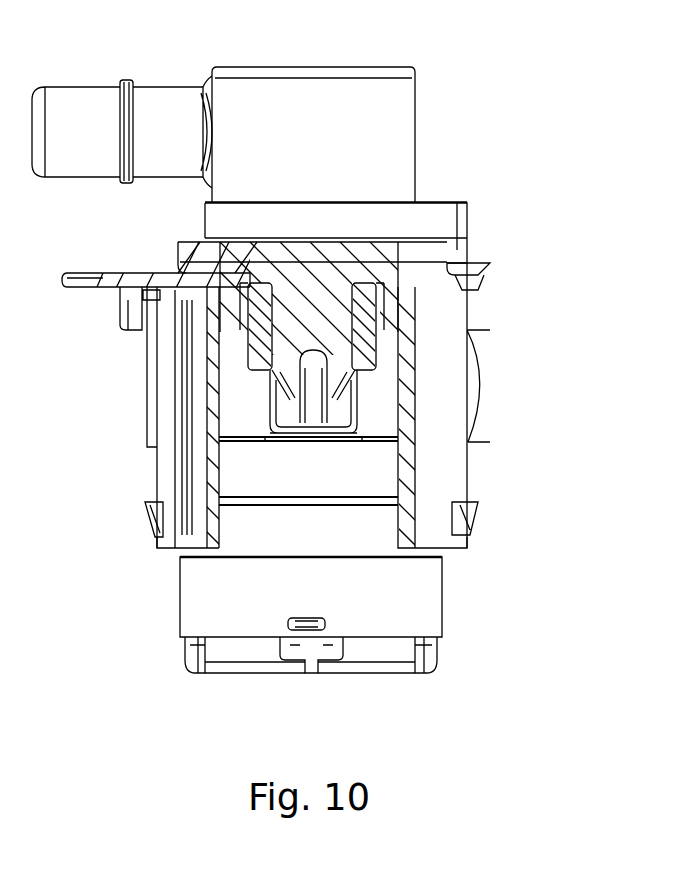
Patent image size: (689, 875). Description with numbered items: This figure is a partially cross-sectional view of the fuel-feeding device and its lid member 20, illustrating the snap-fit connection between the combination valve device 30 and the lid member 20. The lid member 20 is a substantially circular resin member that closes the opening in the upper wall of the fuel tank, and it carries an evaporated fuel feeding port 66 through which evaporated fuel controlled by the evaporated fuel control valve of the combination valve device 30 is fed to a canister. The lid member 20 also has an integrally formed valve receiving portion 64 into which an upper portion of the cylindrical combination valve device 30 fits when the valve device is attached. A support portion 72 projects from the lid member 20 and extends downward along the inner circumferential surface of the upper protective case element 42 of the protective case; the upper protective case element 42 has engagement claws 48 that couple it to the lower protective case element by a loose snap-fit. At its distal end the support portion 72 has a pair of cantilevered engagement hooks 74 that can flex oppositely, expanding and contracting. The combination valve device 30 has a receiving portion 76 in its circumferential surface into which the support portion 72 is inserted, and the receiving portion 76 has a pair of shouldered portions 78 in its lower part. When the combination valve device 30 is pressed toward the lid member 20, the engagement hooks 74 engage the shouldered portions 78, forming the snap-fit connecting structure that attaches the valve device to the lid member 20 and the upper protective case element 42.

The evaporated fuel feeding port 66 is at (82, 100).
The support portion 72 is at (312, 307).
The valve receiving portion 64 is at (188, 253).
The lid member 20 is at (463, 268).
The receiving portion 76 is at (365, 320).
The upper protective case element 42 is at (440, 355).
The engagement hooks 74 is at (337, 390).
The shouldered portions 78 is at (356, 408).
The engagement claws 48 is at (152, 520).
The combination valve device 30 is at (205, 593).